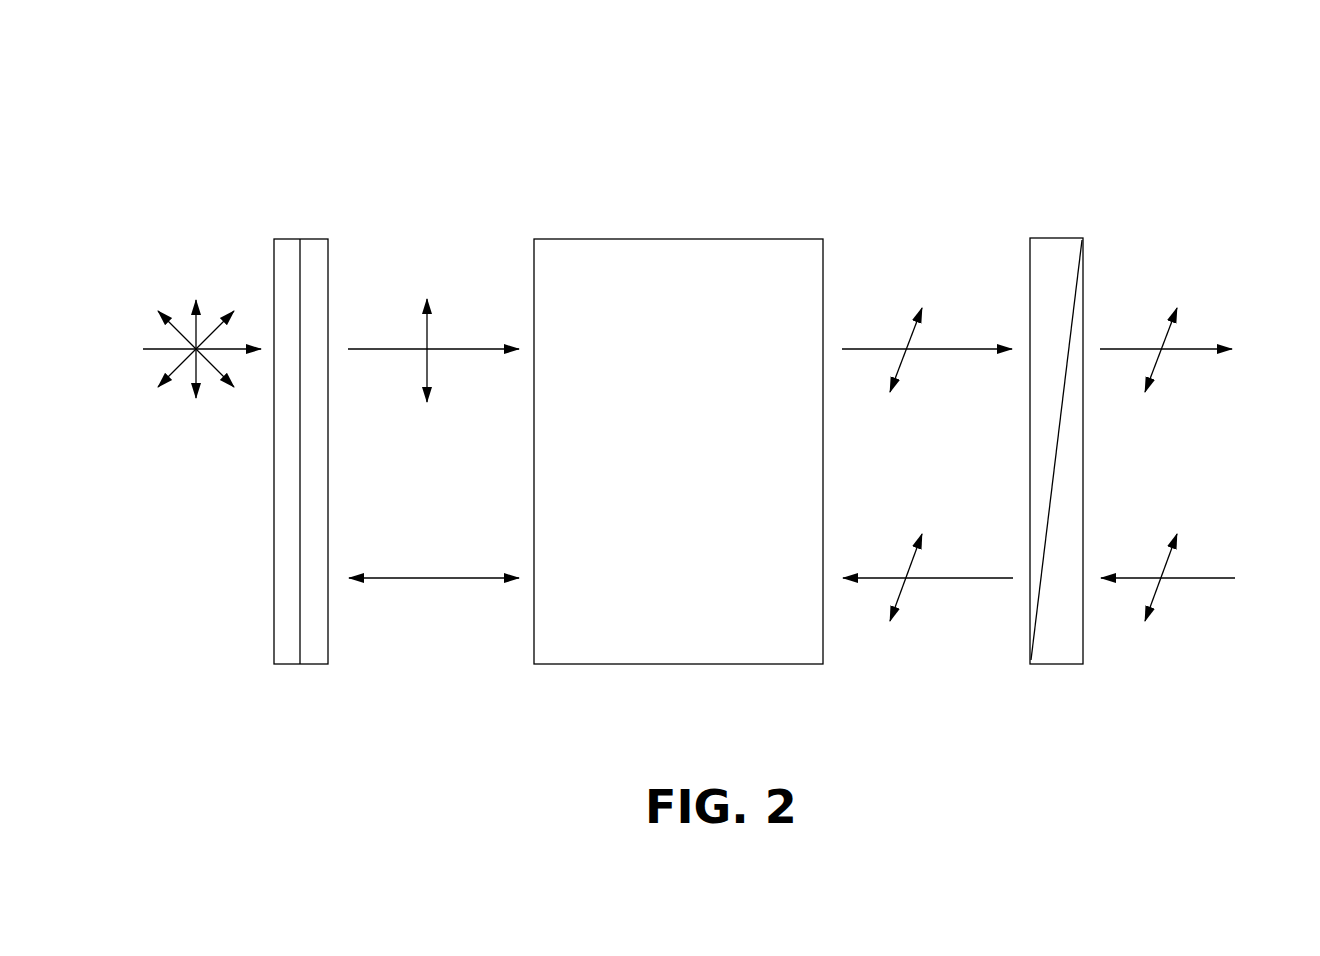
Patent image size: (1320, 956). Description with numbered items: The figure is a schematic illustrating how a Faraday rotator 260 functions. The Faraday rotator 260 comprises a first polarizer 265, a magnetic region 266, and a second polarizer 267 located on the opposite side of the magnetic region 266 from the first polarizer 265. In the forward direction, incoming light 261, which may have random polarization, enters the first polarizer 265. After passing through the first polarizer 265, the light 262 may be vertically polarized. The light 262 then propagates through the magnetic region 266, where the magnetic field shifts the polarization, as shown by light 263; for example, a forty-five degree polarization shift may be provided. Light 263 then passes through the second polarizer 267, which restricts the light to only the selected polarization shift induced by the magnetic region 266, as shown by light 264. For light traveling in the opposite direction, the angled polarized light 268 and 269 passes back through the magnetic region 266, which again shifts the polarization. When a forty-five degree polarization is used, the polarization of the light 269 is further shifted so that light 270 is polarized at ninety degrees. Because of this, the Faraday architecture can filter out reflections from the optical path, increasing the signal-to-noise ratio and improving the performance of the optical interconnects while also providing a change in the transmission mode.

The Faraday rotator 260 is at (1214, 86).
The incoming light 261 is at (170, 288).
The light 262 is at (421, 270).
The light 263 is at (927, 263).
The light 264 is at (1187, 270).
The first polarizer 265 is at (287, 239).
The magnetic region 266 is at (647, 239).
The second polarizer 267 is at (1055, 238).
The angled polarized light 268 is at (1177, 625).
The angled polarized light 269 is at (914, 629).
The light 270 is at (434, 638).